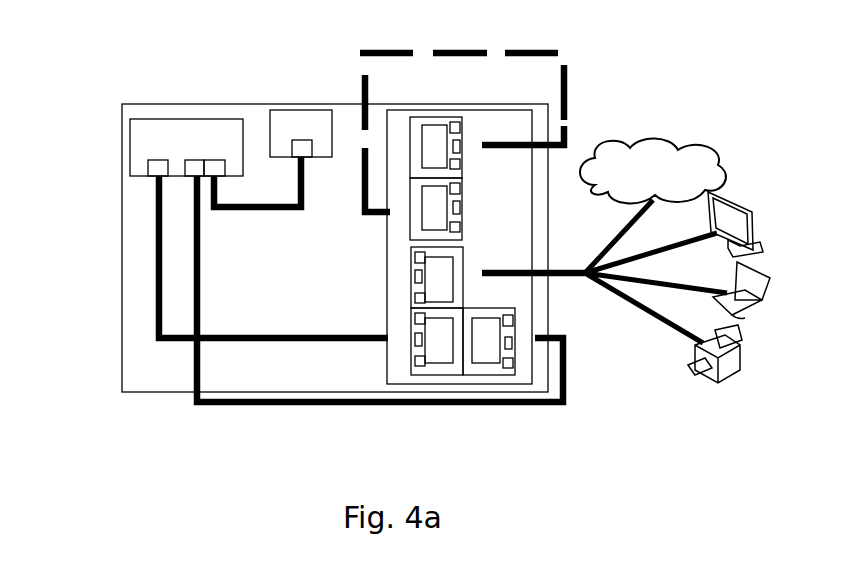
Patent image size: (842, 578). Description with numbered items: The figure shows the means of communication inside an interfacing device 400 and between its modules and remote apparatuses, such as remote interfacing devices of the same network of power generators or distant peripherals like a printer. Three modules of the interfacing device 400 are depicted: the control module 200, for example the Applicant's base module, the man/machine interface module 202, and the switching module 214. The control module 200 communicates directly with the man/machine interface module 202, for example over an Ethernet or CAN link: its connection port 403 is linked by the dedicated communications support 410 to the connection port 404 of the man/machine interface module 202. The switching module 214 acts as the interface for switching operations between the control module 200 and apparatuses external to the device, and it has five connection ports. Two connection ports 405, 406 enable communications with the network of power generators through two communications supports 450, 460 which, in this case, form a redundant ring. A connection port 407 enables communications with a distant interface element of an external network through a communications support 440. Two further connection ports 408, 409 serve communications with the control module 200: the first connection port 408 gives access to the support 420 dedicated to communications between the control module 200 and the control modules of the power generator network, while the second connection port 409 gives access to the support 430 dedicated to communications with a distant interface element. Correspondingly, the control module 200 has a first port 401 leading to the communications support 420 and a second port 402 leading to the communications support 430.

The control module 200 is at (168, 119).
The man/machine interface module 202 is at (290, 110).
The switching module 214 is at (532, 380).
The interfacing device 400 is at (153, 392).
The first port 401 is at (147, 166).
The second port 402 is at (185, 160).
The connection port 403 is at (222, 160).
The connection port 404 is at (307, 160).
The connection port 405 is at (465, 163).
The connection port 406 is at (465, 217).
The connection port 407 is at (463, 263).
The first connection port 408 is at (430, 375).
The second connection port 409 is at (488, 375).
The dedicated communications support 410 is at (258, 207).
The communications support 420 is at (323, 335).
The communications support 430 is at (293, 405).
The communications support 440 is at (508, 278).
The communications support 450 is at (568, 130).
The communications support 460 is at (378, 217).